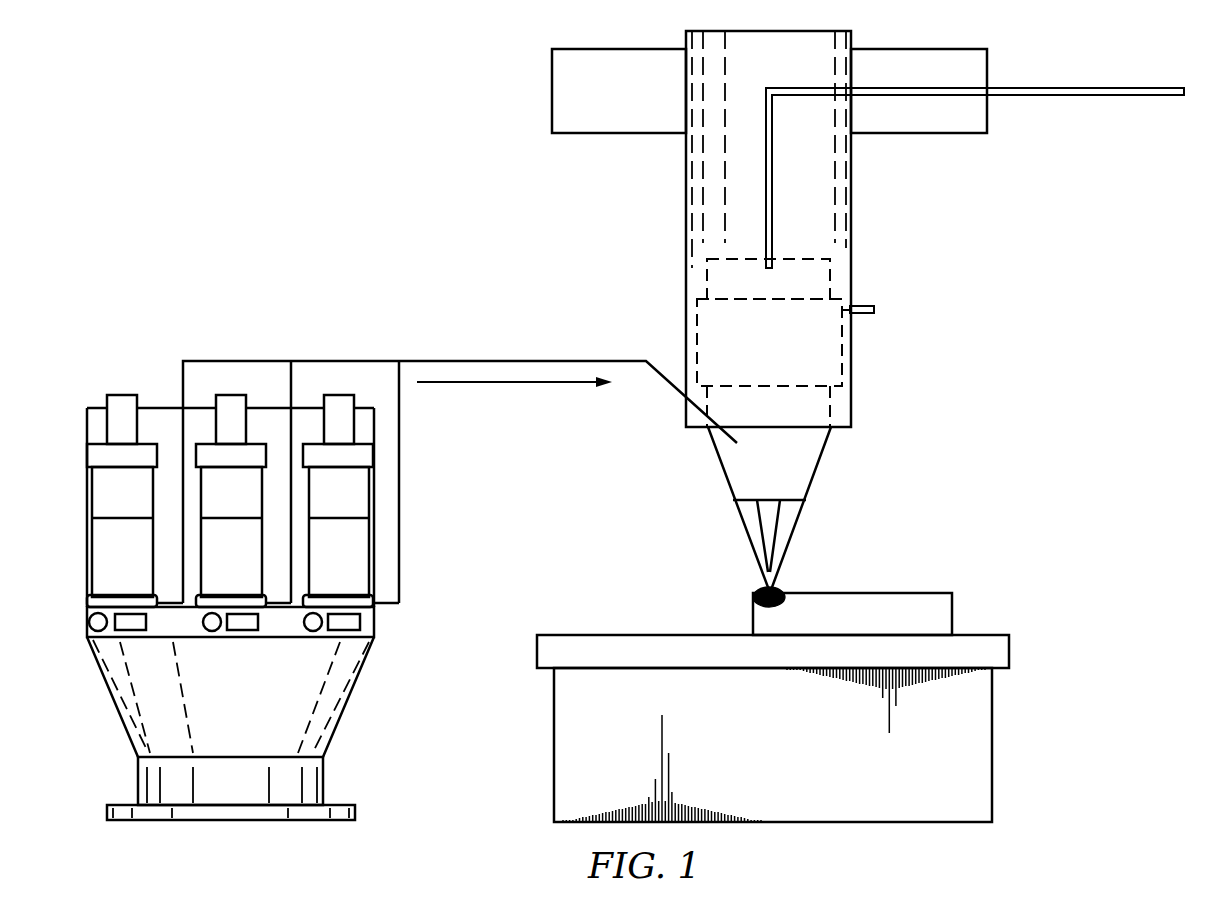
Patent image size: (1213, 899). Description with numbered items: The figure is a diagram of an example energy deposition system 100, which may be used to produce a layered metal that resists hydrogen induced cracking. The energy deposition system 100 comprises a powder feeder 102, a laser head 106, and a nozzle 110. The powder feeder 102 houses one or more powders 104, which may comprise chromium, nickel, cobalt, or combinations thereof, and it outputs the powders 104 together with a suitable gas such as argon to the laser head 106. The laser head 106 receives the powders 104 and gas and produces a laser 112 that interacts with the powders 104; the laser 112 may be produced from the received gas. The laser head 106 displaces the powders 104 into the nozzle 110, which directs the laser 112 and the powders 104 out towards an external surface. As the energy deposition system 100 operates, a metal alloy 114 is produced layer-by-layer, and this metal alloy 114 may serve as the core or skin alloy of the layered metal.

The energy deposition system 100 is at (320, 113).
The powder feeder 102 is at (323, 785).
The powders 104 is at (739, 525).
The laser head 106 is at (702, 319).
The nozzle 110 is at (824, 457).
The laser 112 is at (775, 520).
The metal alloy 114 is at (893, 593).